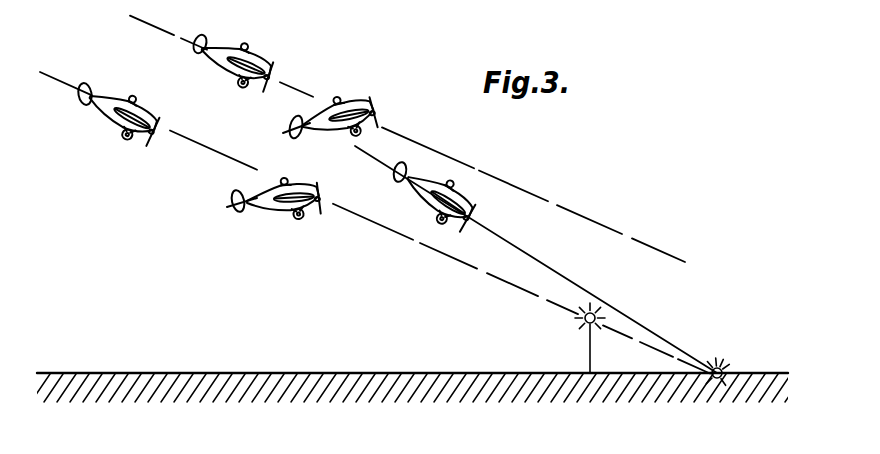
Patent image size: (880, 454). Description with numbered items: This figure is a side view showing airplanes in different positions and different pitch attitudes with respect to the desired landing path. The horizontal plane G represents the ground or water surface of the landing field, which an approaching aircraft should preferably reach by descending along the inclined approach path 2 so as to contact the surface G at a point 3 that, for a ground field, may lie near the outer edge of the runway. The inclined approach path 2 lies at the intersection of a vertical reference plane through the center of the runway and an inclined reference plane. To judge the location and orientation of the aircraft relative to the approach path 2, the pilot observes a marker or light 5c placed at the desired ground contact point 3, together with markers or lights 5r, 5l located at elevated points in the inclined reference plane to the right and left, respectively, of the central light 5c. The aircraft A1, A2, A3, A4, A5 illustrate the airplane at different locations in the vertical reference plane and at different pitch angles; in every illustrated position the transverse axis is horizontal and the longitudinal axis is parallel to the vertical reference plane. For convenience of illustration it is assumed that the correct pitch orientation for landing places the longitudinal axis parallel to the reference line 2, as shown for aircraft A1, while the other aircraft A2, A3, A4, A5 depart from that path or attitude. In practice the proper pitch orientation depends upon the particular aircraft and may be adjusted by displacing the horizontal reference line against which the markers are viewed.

The aircraft A1 is at (103, 115).
The aircraft A2 is at (261, 61).
The aircraft A3 is at (267, 206).
The aircraft A4 is at (352, 94).
The aircraft A5 is at (459, 194).
The inclined approach path 2 is at (380, 228).
The ground contact point 3 is at (729, 371).
The central marker or light 5c is at (727, 359).
The right marker or light 5r is at (569, 338).
The left marker or light 5l is at (569, 338).
The ground or water surface G is at (416, 374).